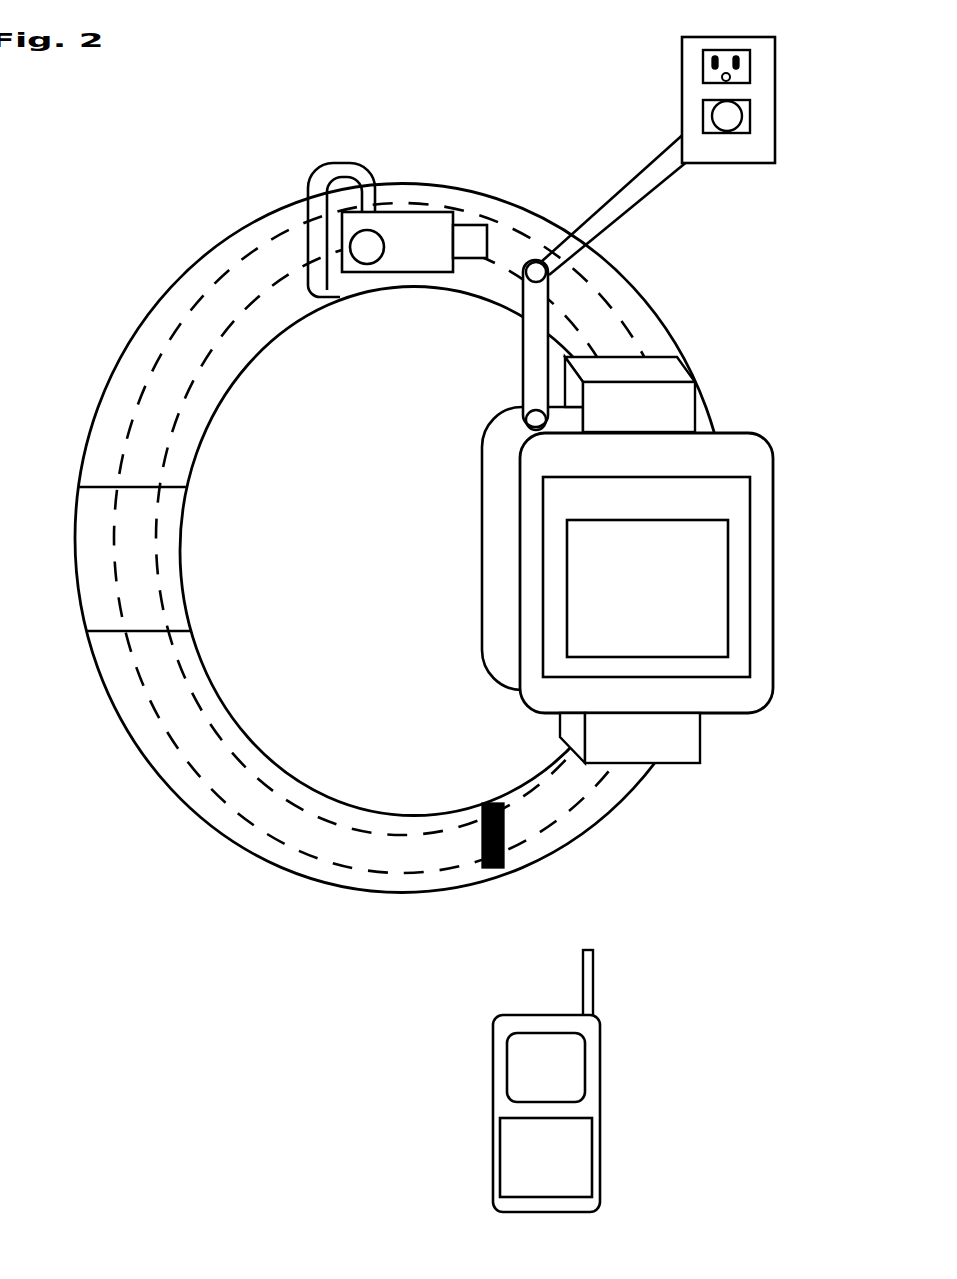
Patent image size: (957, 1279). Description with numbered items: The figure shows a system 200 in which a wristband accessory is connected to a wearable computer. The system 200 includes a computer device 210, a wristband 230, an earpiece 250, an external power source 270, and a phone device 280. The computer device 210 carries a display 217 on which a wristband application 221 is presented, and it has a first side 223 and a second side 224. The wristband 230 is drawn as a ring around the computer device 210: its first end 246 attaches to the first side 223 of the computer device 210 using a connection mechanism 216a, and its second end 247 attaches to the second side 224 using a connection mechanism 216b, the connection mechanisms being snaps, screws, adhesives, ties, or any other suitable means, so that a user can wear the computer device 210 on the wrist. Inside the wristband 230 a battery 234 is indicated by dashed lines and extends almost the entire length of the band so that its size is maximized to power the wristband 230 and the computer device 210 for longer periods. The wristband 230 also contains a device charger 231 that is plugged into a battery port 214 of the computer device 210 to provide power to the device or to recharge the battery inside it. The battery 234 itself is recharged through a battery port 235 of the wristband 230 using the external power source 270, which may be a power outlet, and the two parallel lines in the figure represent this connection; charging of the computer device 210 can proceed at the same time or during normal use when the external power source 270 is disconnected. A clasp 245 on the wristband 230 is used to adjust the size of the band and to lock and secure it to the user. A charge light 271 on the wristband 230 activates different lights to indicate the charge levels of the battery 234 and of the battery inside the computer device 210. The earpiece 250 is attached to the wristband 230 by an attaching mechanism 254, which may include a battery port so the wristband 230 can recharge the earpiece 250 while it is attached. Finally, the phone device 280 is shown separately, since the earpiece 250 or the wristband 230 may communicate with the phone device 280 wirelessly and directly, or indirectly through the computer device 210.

The system 200 is at (830, 60).
The computer device 210 is at (645, 574).
The battery port 214 is at (518, 429).
The connection mechanism 216a is at (630, 394).
The connection mechanism 216b is at (630, 738).
The display 217 is at (646, 577).
The wristband application 221 is at (647, 588).
The first side 223 is at (709, 387).
The second side 224 is at (716, 749).
The wristband 230 is at (420, 568).
The device charger 231 is at (443, 397).
The battery 234 is at (168, 348).
The battery port 235 is at (519, 274).
The clasp 245 is at (190, 600).
The first end 246 is at (684, 280).
The second end 247 is at (645, 847).
The earpiece 250 is at (301, 177).
The attaching mechanism 254 is at (387, 226).
The external power source 270 is at (678, 78).
The charge light 271 is at (480, 806).
The phone device 280 is at (490, 1090).